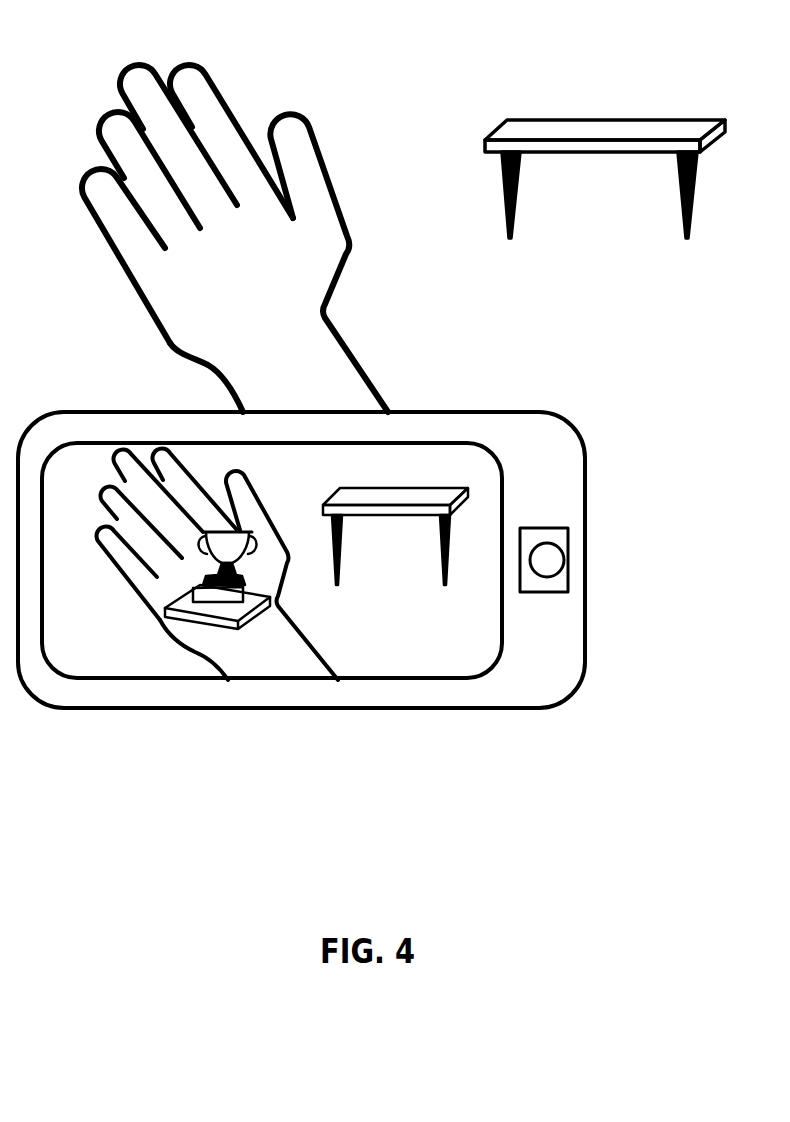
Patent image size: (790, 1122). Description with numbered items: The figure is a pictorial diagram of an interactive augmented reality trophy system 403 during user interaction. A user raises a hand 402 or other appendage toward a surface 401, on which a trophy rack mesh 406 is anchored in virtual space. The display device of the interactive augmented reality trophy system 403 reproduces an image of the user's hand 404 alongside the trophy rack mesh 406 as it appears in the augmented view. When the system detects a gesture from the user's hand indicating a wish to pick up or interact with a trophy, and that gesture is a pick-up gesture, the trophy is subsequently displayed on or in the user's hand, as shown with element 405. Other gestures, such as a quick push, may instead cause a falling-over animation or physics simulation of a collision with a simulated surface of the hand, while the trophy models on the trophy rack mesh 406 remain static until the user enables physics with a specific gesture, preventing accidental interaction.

The surface 401 is at (588, 123).
The hand 402 is at (175, 64).
The interactive augmented reality trophy system 403 is at (504, 420).
The image of the user's hand 404 is at (284, 471).
The trophy displayed in the user's hand 405 is at (258, 580).
The trophy rack mesh 406 is at (376, 500).